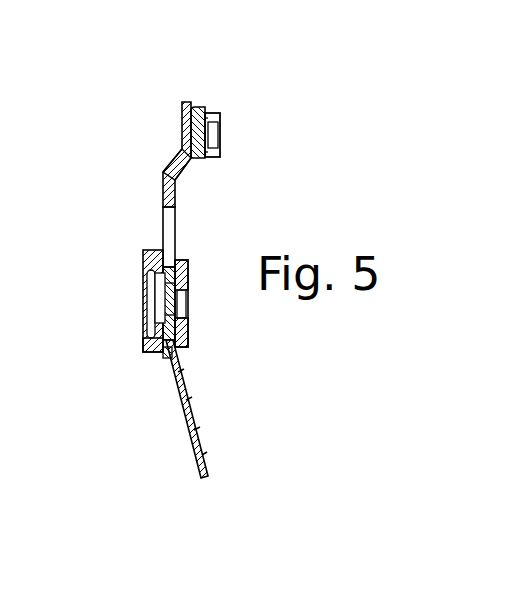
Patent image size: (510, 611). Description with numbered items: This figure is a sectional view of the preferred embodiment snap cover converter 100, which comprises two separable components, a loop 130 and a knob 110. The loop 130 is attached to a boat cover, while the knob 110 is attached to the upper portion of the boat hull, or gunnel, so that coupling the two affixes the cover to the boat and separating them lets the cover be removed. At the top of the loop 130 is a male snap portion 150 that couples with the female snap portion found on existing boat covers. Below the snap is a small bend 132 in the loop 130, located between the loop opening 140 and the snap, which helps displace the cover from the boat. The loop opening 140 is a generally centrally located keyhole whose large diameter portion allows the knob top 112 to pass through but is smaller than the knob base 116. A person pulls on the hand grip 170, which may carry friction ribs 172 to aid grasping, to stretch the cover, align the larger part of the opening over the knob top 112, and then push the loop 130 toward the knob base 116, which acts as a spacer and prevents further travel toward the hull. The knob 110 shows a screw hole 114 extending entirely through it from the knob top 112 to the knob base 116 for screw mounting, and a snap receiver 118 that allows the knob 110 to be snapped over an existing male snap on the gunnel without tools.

The snap cover converter 100 is at (150, 117).
The knob 110 is at (144, 262).
The knob top 112 is at (186, 345).
The screw hole 114 is at (183, 302).
The knob base 116 is at (143, 345).
The snap receiver 118 is at (150, 300).
The loop 130 is at (179, 200).
The bend 132 is at (163, 176).
The loop opening 140 is at (179, 240).
The male snap portion 150 is at (210, 110).
The hand grip 170 is at (189, 430).
The friction ribs 172 is at (196, 415).